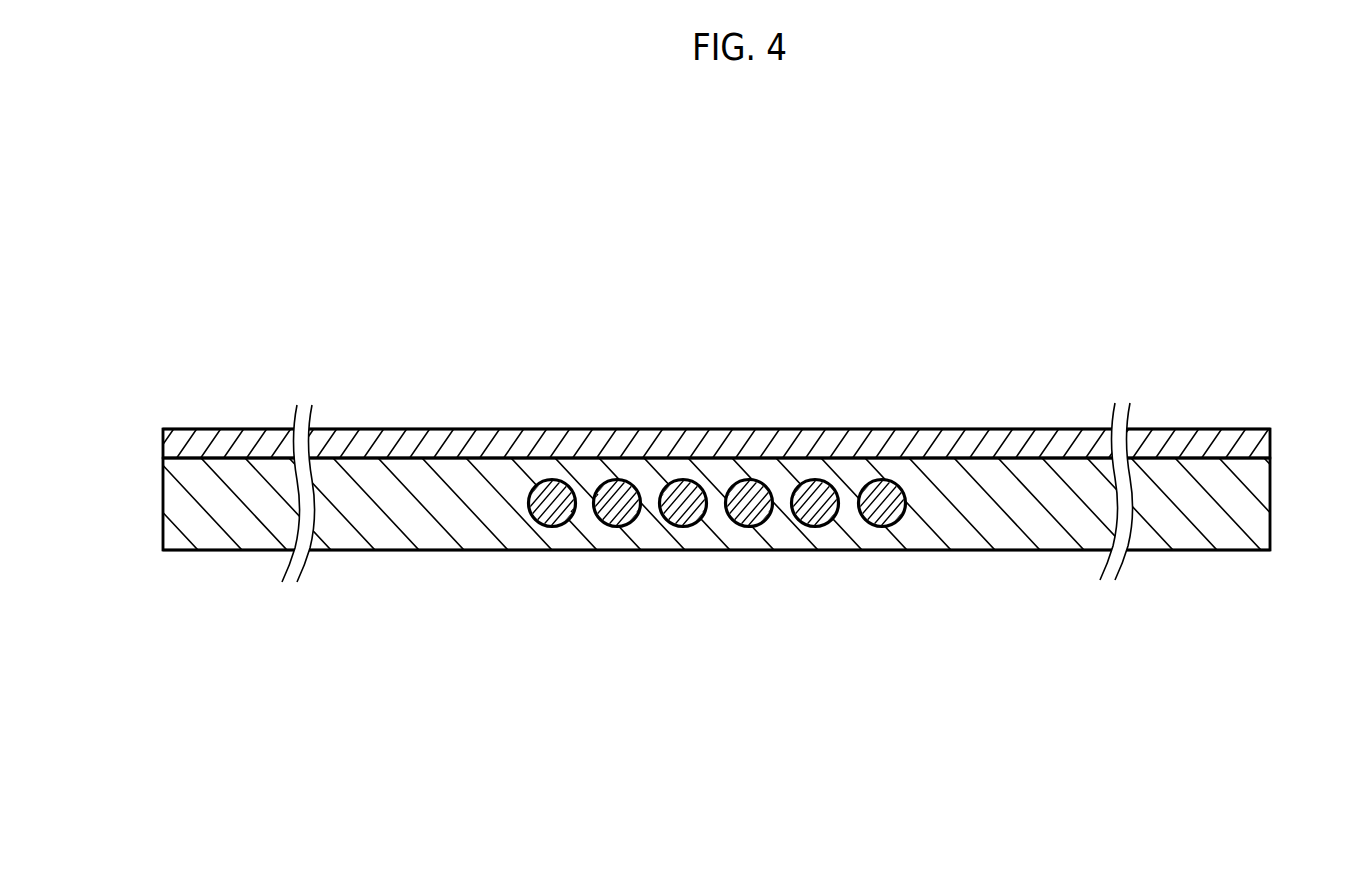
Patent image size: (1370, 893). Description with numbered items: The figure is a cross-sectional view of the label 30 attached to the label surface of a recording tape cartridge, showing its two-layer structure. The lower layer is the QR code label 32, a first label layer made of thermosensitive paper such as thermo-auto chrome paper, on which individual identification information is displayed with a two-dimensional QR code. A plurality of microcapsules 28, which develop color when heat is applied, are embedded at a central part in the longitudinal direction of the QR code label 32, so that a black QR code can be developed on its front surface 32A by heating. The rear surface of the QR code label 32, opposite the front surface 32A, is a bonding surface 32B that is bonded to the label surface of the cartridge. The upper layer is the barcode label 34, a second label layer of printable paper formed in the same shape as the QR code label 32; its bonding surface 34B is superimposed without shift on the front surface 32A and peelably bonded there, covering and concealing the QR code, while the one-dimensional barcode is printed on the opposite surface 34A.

The microcapsules 28 is at (825, 528).
The label 30 is at (1269, 430).
The QR code label 32 is at (172, 507).
The front surface of the QR code label 32A is at (942, 460).
The bonding surface of the QR code label 32B is at (963, 550).
The barcode label 34 is at (172, 443).
The front surface of the barcode label 34A is at (463, 428).
The bonding surface of the barcode label 34B is at (440, 458).